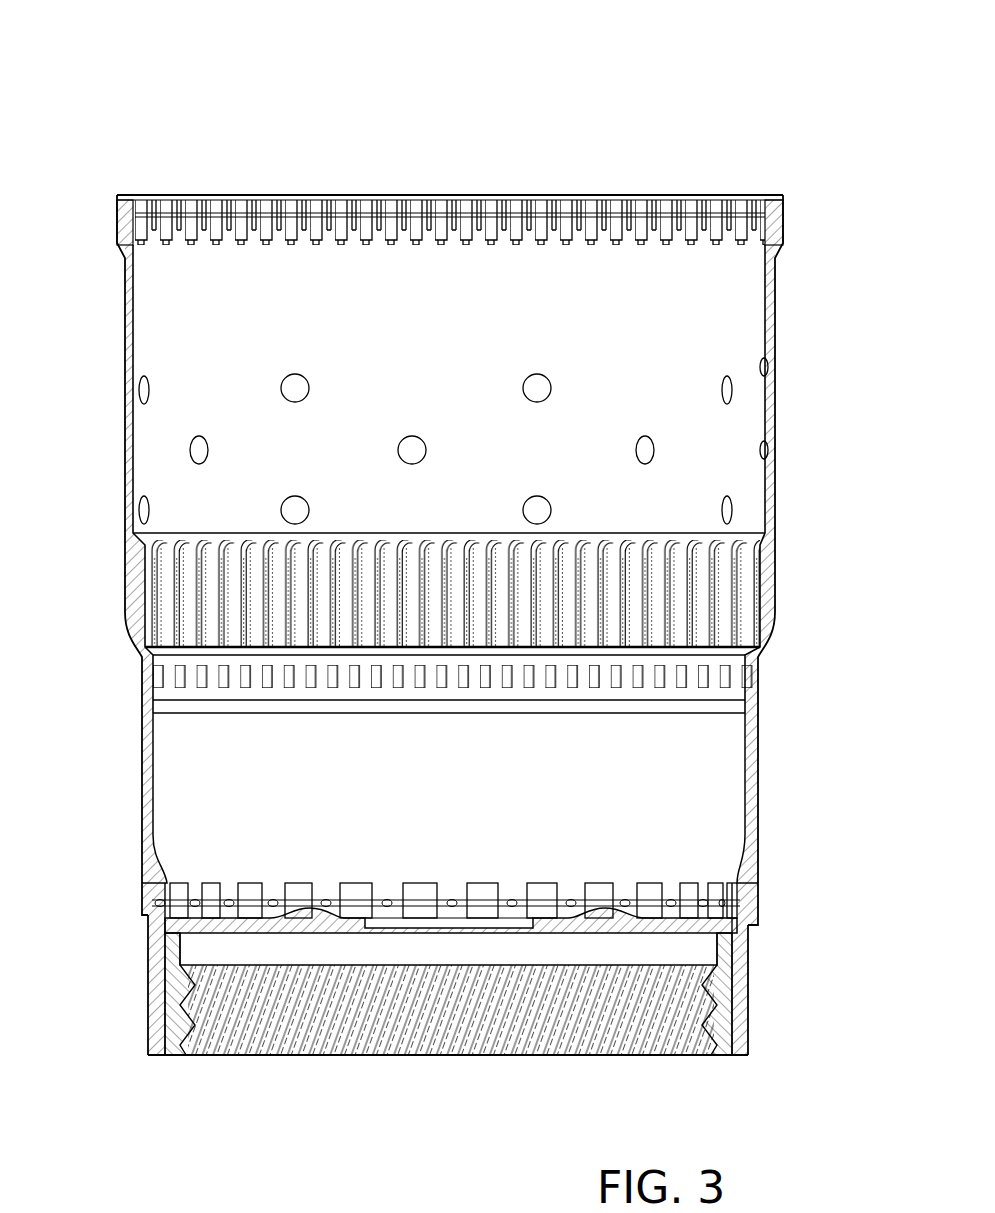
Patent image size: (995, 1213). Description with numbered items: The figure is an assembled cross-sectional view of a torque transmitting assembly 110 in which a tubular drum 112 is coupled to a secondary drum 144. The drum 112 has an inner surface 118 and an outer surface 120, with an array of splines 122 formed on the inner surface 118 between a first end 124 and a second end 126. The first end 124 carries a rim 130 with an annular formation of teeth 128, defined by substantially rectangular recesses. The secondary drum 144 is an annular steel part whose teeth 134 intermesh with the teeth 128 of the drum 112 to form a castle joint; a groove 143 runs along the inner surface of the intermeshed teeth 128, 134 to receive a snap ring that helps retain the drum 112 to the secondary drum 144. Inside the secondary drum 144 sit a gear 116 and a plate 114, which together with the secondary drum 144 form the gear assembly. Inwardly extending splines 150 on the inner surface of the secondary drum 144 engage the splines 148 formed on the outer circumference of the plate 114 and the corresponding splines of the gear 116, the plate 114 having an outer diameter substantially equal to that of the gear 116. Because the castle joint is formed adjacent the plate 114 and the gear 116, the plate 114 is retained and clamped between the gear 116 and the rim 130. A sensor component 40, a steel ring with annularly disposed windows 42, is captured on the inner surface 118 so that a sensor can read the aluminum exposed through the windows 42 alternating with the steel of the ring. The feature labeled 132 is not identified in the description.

The torque transmitting assembly 110 is at (95, 55).
The drum 112 is at (790, 336).
The plate 114 is at (667, 905).
The gear 116 is at (451, 1020).
The inner surface 118 is at (770, 368).
The outer surface 120 is at (775, 410).
The splines 122 is at (178, 594).
The first end 124 is at (150, 924).
The second end 126 is at (770, 195).
The teeth 128 is at (390, 900).
The rim 130 is at (762, 927).
The thread 132 is at (328, 1017).
The teeth 134 is at (602, 886).
The sensor component 40 is at (243, 712).
The windows 42 is at (305, 688).
The groove 143 is at (262, 883).
The secondary drum 144 is at (140, 1008).
The splines 148 is at (200, 937).
The splines 150 is at (722, 967).